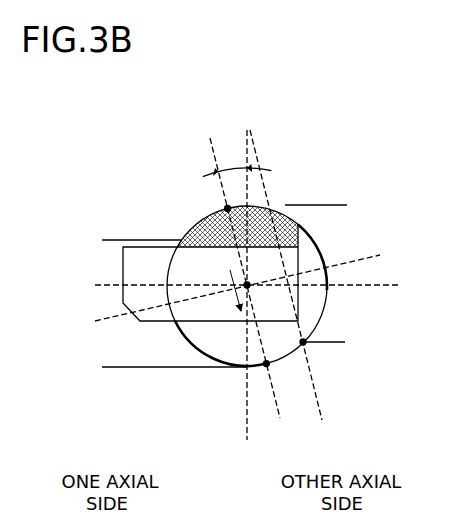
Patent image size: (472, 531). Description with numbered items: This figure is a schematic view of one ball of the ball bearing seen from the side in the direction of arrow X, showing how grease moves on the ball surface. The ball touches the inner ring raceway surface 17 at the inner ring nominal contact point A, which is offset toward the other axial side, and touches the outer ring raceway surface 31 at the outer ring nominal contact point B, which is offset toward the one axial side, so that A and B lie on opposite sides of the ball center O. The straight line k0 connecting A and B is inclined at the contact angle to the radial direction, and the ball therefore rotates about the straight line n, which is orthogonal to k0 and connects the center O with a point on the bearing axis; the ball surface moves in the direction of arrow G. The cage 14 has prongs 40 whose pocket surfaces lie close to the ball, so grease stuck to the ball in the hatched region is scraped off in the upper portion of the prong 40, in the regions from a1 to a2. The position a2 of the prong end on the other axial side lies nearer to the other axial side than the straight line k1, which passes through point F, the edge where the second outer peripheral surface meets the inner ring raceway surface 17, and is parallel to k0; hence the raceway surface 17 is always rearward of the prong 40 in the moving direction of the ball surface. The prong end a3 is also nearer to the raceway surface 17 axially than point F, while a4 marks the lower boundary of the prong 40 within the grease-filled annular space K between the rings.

The prong 40 is at (317, 286).
The cage 14 is at (335, 293).
The outer ring raceway surface 31 is at (213, 232).
The inner ring raceway surface 17 is at (245, 352).
The annular space K is at (132, 355).
The region a1 is at (181, 240).
The end portion position a2 is at (298, 245).
The end portion a3 is at (298, 322).
The fourth edge line a4 is at (175, 322).
The straight line k0 is at (214, 140).
The straight line k1 is at (257, 138).
The straight line n is at (365, 257).
The outer ring nominal contact point B is at (217, 201).
The center of the ball O is at (256, 275).
The inner ring nominal contact point A is at (275, 374).
The point F is at (305, 345).
The arrow G is at (228, 296).